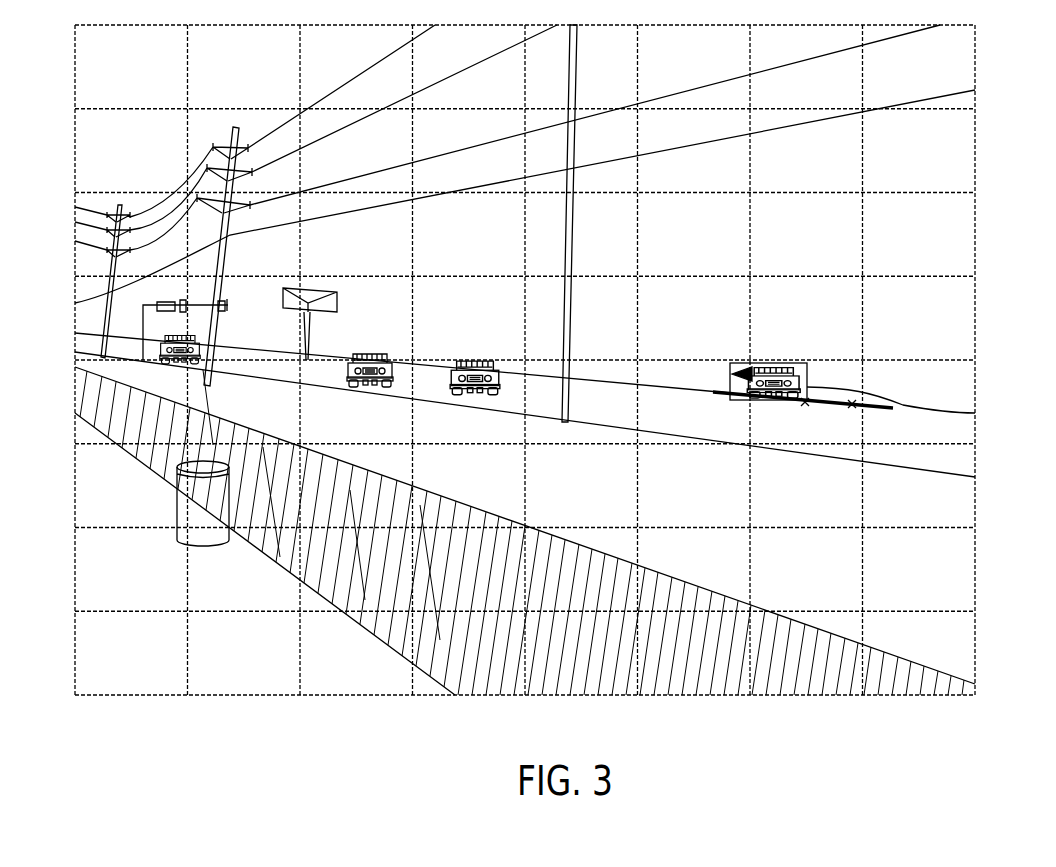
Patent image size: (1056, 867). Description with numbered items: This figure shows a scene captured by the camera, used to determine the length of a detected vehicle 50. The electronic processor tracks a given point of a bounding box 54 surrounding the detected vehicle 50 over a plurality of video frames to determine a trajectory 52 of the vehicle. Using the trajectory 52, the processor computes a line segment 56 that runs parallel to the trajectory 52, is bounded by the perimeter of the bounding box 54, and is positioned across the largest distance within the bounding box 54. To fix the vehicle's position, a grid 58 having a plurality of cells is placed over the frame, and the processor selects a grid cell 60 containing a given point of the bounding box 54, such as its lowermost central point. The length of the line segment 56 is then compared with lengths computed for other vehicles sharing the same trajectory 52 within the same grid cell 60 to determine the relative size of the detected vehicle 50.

The detected vehicle 50 is at (793, 360).
The trajectory 52 is at (877, 408).
The bounding box 54 is at (903, 405).
The line segment 56 is at (807, 378).
The grid 58 is at (948, 193).
The grid cell 60 is at (863, 381).